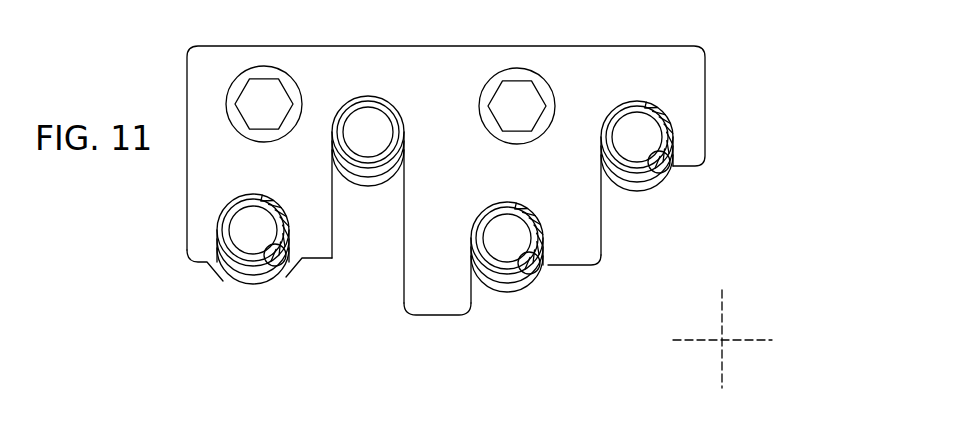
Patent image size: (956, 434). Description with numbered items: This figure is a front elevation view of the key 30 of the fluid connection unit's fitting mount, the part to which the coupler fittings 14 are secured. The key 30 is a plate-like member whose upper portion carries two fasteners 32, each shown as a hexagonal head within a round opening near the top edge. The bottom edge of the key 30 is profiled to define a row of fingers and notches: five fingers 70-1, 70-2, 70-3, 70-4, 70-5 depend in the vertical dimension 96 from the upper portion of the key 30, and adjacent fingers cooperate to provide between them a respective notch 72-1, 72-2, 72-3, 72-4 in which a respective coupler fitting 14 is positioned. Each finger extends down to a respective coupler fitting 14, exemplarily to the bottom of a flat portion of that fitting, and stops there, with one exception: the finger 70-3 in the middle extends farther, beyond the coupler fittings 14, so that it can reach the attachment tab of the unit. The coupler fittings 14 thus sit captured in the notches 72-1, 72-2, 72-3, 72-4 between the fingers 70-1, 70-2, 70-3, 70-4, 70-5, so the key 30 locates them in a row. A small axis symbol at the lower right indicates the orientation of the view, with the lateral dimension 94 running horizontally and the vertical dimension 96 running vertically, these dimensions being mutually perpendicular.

The key 30 is at (432, 60).
The fasteners 32 is at (266, 90).
The coupler fittings 14 is at (228, 283).
The finger 70-1 is at (700, 165).
The finger 70-2 is at (574, 248).
The finger 70-3 is at (445, 316).
The finger 70-4 is at (312, 262).
The finger 70-5 is at (197, 245).
The notch 72-1 is at (650, 190).
The notch 72-2 is at (530, 290).
The notch 72-3 is at (388, 290).
The notch 72-4 is at (272, 268).
The lateral dimension 94 is at (744, 340).
The vertical dimension 96 is at (722, 358).